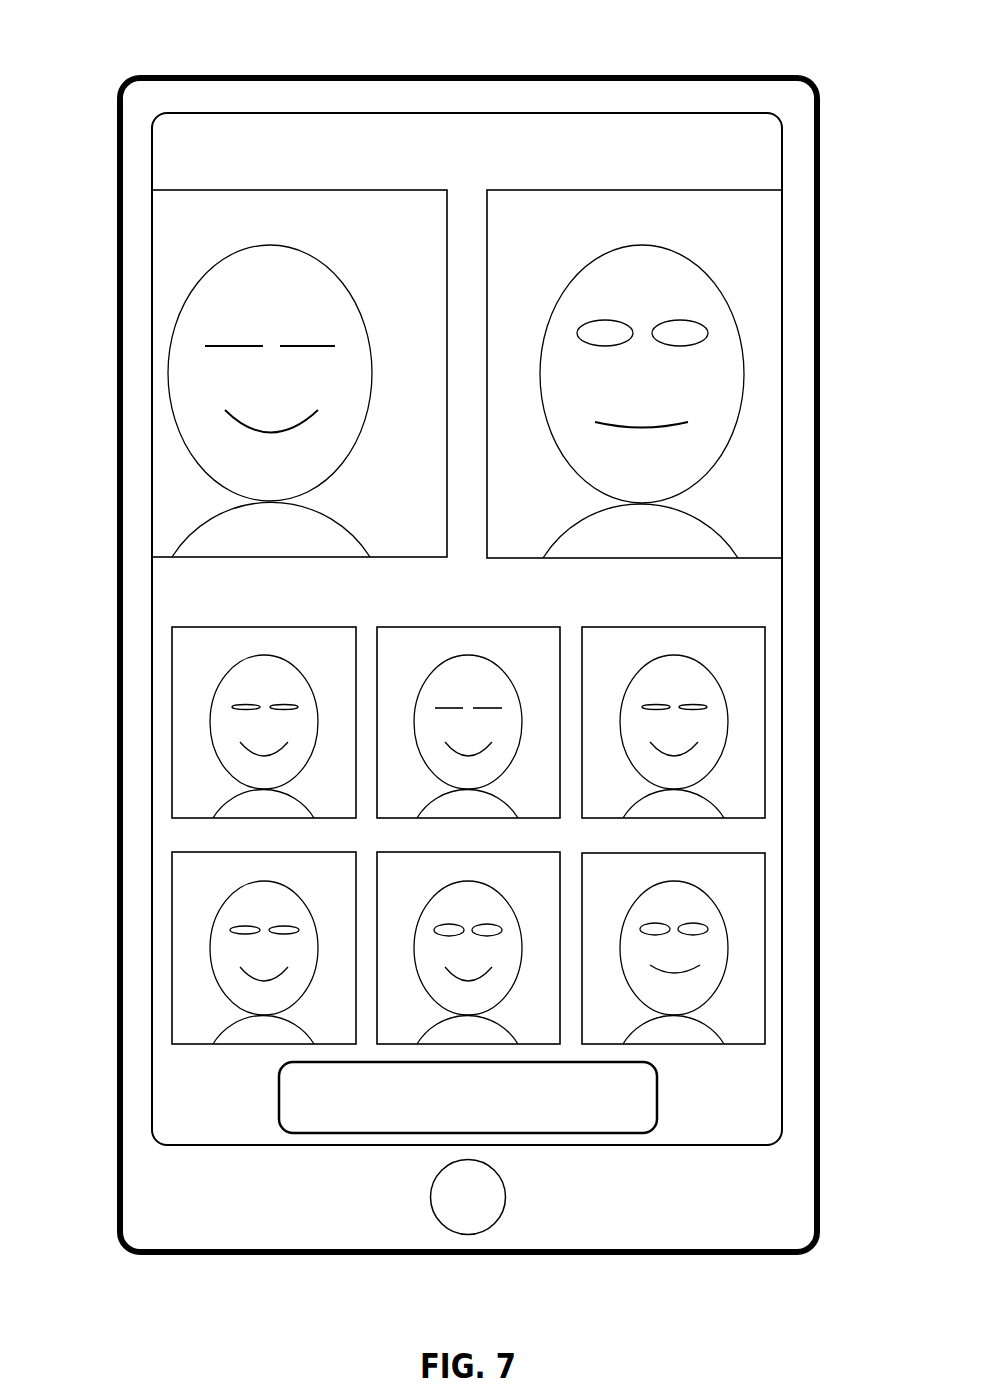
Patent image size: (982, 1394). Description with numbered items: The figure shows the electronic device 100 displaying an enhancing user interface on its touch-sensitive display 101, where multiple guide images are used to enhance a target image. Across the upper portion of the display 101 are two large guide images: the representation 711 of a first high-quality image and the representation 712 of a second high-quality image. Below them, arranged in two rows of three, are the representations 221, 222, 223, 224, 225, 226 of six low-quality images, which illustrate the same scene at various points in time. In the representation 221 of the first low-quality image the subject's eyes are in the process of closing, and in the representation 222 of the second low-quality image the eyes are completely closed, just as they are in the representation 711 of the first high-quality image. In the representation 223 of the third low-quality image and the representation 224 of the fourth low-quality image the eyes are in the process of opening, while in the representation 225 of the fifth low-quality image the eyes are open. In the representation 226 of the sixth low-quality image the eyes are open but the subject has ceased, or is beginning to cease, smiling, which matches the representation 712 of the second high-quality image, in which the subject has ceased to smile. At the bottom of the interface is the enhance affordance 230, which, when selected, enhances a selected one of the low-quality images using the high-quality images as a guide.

The electronic device 100 is at (614, 50).
The touch-sensitive display 101 is at (152, 595).
The representation of first high-quality image 711 is at (378, 189).
The representation of second high-quality image 712 is at (565, 189).
The representation of first low-quality image 221 is at (287, 632).
The representation of second low-quality image 222 is at (513, 632).
The representation of third low-quality image 223 is at (709, 632).
The representation of fourth low-quality image 224 is at (293, 852).
The representation of fifth low-quality image 225 is at (516, 852).
The representation of sixth low-quality image 226 is at (705, 852).
The enhance affordance 230 is at (657, 1095).